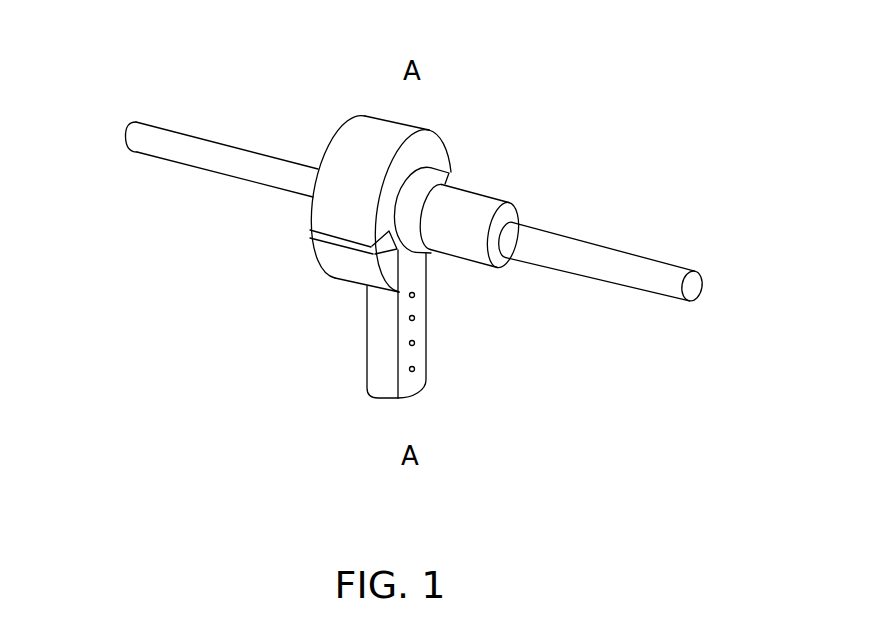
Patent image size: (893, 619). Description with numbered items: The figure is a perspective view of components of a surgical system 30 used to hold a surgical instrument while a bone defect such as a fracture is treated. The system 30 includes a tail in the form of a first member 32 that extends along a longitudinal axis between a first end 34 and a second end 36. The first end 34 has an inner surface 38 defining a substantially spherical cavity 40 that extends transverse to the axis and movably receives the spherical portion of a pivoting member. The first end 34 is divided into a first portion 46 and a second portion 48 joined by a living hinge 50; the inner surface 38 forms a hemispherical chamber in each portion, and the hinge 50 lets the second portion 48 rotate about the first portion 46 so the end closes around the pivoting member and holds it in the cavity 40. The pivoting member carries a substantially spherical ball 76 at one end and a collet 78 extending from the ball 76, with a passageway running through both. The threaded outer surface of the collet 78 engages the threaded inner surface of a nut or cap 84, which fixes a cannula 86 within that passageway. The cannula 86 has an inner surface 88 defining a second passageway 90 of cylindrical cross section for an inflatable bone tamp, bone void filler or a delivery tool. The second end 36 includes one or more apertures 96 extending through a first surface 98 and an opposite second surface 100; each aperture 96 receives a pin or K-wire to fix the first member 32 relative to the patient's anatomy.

The surgical system 30 is at (581, 381).
The first member 32 is at (256, 276).
The first end 34 is at (380, 123).
The second end 36 is at (383, 384).
The inner surface 38 is at (388, 286).
The spherical cavity 40 is at (451, 163).
The first portion 46 is at (328, 260).
The second portion 48 is at (348, 133).
The living hinge 50 is at (308, 232).
The spherical ball 76 is at (420, 178).
The collet 78 is at (517, 213).
The cap 84 is at (532, 180).
The cannula 86 is at (150, 180).
The inner surface 88 is at (130, 140).
The second passageway 90 is at (104, 112).
The aperture 96 is at (415, 296).
The first surface 98 is at (416, 344).
The second surface 100 is at (367, 370).